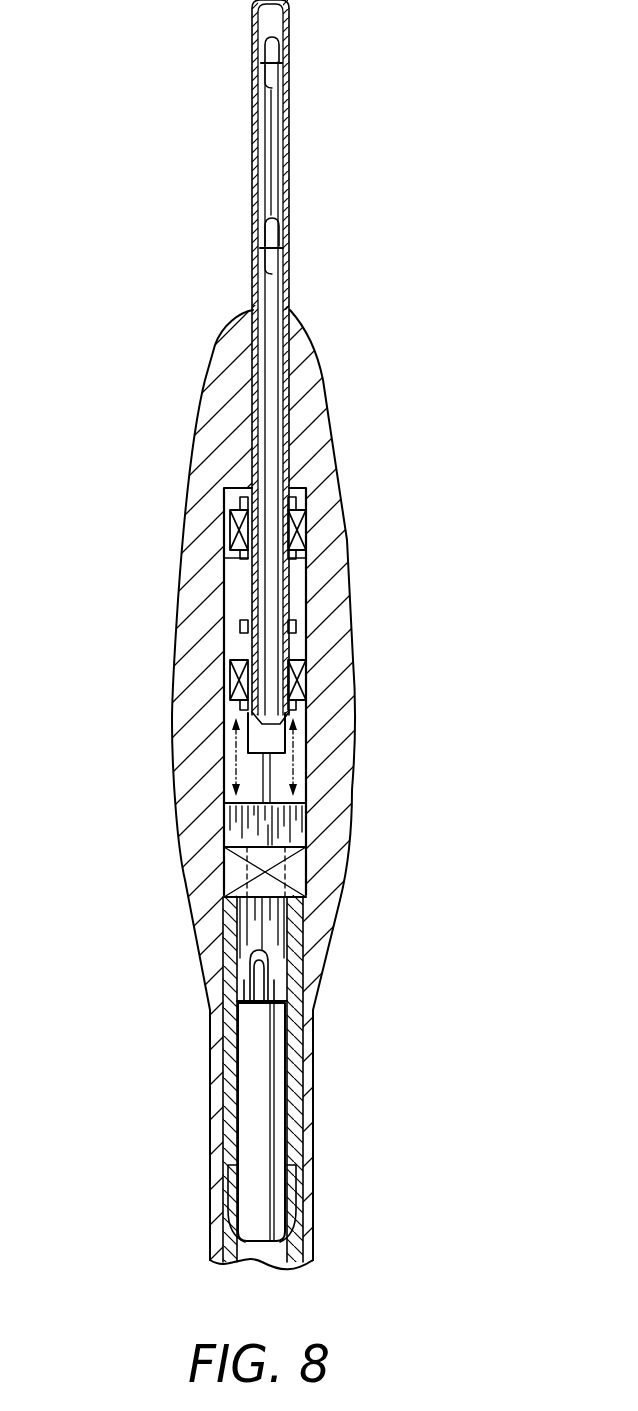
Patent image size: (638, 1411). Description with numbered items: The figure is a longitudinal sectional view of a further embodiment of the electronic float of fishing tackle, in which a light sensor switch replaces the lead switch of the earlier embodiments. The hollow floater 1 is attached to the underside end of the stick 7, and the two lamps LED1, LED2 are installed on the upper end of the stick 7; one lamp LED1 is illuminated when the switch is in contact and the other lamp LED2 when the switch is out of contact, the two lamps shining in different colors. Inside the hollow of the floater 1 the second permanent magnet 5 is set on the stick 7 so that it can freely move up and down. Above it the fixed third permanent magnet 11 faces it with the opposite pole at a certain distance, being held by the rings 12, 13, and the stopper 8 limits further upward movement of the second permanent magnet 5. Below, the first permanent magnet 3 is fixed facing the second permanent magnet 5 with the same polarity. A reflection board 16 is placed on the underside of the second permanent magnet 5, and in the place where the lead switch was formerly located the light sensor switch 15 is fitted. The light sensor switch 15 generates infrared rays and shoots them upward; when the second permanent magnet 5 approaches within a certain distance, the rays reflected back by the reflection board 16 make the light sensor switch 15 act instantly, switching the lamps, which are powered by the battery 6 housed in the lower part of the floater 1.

The floater 1 is at (340, 551).
The first permanent magnet 3 is at (306, 880).
The second permanent magnet 5 is at (305, 689).
The battery 6 is at (258, 1082).
The stick 7 is at (285, 241).
The stopper 8 is at (228, 628).
The third permanent magnet 11 is at (228, 533).
The ring 12 is at (312, 497).
The ring 13 is at (226, 558).
The light sensor switch 15 is at (306, 830).
The reflection board 16 is at (226, 700).
The lamp LED 1 LED1 is at (276, 52).
The lamp LED 2 LED2 is at (265, 238).